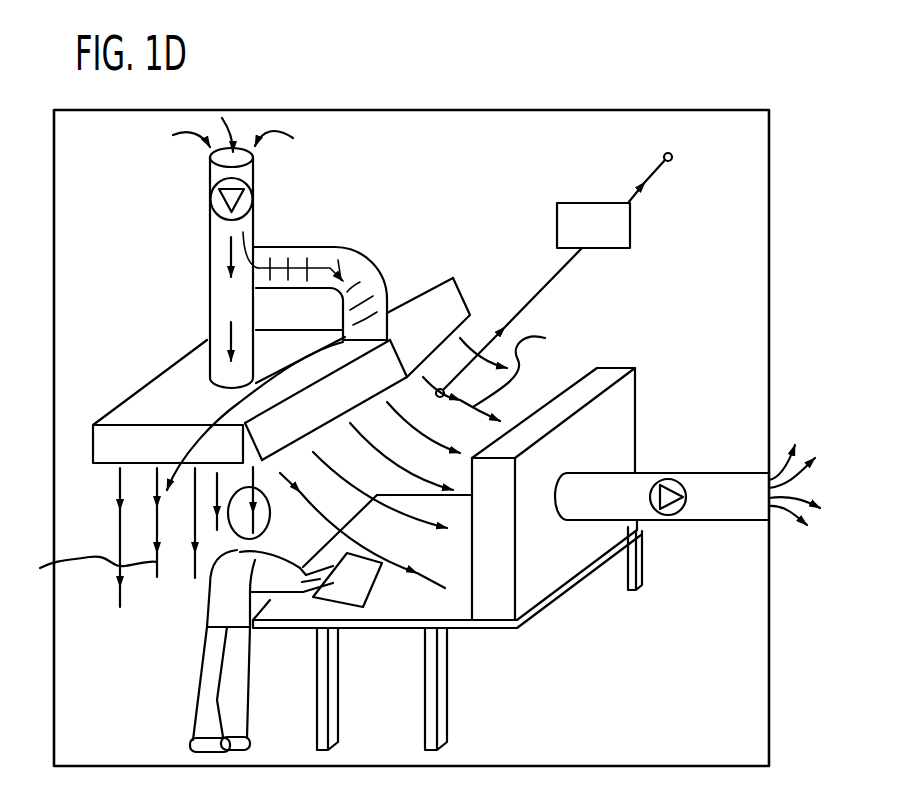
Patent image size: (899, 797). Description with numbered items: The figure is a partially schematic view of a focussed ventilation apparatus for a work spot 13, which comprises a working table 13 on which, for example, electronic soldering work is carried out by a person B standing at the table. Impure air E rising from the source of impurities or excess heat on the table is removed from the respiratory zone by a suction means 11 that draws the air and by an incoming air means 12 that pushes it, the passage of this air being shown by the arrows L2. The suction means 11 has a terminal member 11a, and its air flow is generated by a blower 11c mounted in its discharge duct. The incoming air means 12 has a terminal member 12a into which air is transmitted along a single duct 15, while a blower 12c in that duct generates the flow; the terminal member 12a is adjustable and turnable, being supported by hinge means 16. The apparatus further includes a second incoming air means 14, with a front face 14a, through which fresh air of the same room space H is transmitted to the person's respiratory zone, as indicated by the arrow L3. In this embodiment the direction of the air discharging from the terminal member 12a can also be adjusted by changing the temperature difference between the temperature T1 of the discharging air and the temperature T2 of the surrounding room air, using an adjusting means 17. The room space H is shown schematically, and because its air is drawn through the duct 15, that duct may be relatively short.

The suction means 11 is at (630, 360).
The terminal member 11a is at (632, 425).
The blower 11c is at (668, 516).
The incoming air means 12 is at (480, 270).
The terminal member 12a is at (455, 278).
The blower 12c is at (212, 200).
The work spot 13 is at (367, 617).
The second incoming air means 14 is at (137, 382).
The front face of distribution box 14a is at (168, 444).
The duct 15 is at (255, 161).
The hinge means 16 is at (182, 537).
The adjusting means 17 is at (630, 236).
The temperature of the discharging air T1 is at (505, 343).
The temperature of the room space air T2 is at (672, 156).
The room space H is at (135, 286).
The arrows of air passage L2 is at (524, 366).
The arrow of fresh air flow L3 is at (84, 577).
The operator B is at (213, 598).
The impure air / source of impurities E is at (349, 560).